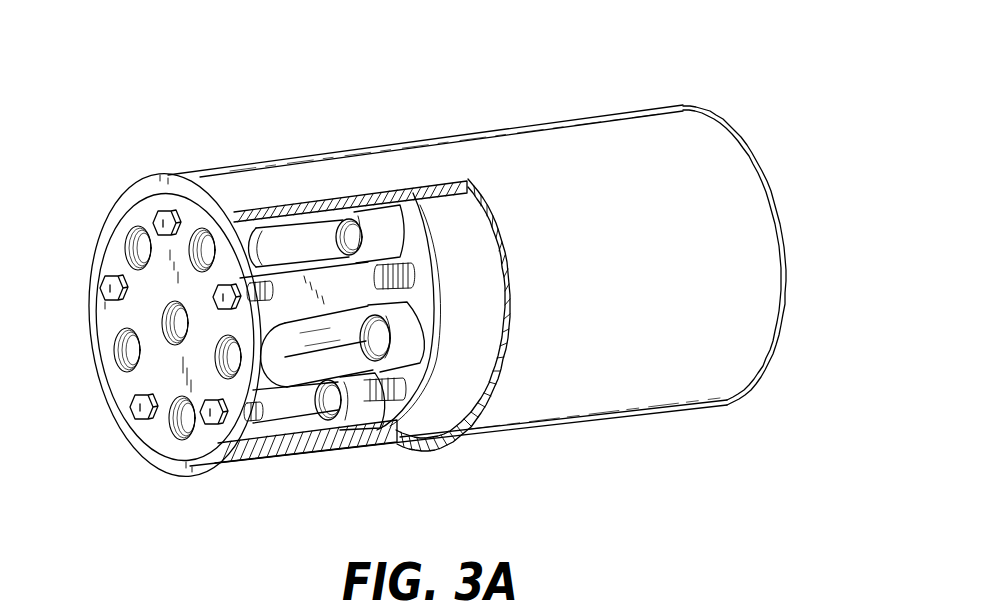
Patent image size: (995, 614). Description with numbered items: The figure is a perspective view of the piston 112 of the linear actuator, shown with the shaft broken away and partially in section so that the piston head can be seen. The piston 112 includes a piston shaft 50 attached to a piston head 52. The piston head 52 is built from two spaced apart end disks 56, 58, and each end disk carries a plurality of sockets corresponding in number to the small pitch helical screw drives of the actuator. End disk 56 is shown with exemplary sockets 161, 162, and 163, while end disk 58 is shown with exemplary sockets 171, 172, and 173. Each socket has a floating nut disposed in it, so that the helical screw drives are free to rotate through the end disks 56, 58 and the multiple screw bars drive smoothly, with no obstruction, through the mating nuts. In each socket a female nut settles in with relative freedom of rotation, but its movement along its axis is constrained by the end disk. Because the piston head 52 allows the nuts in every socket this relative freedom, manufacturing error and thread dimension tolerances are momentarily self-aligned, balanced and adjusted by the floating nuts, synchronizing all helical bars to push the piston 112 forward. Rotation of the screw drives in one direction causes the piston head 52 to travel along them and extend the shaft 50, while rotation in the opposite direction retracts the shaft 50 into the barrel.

The piston shaft 50 is at (707, 289).
The piston head 52 is at (456, 296).
The end disk 56 is at (137, 313).
The end disk 58 is at (425, 303).
The piston 112 is at (567, 120).
The socket 161 is at (218, 470).
The socket 162 is at (262, 463).
The socket 163 is at (257, 217).
The socket 171 is at (363, 447).
The socket 172 is at (417, 417).
The socket 173 is at (377, 220).